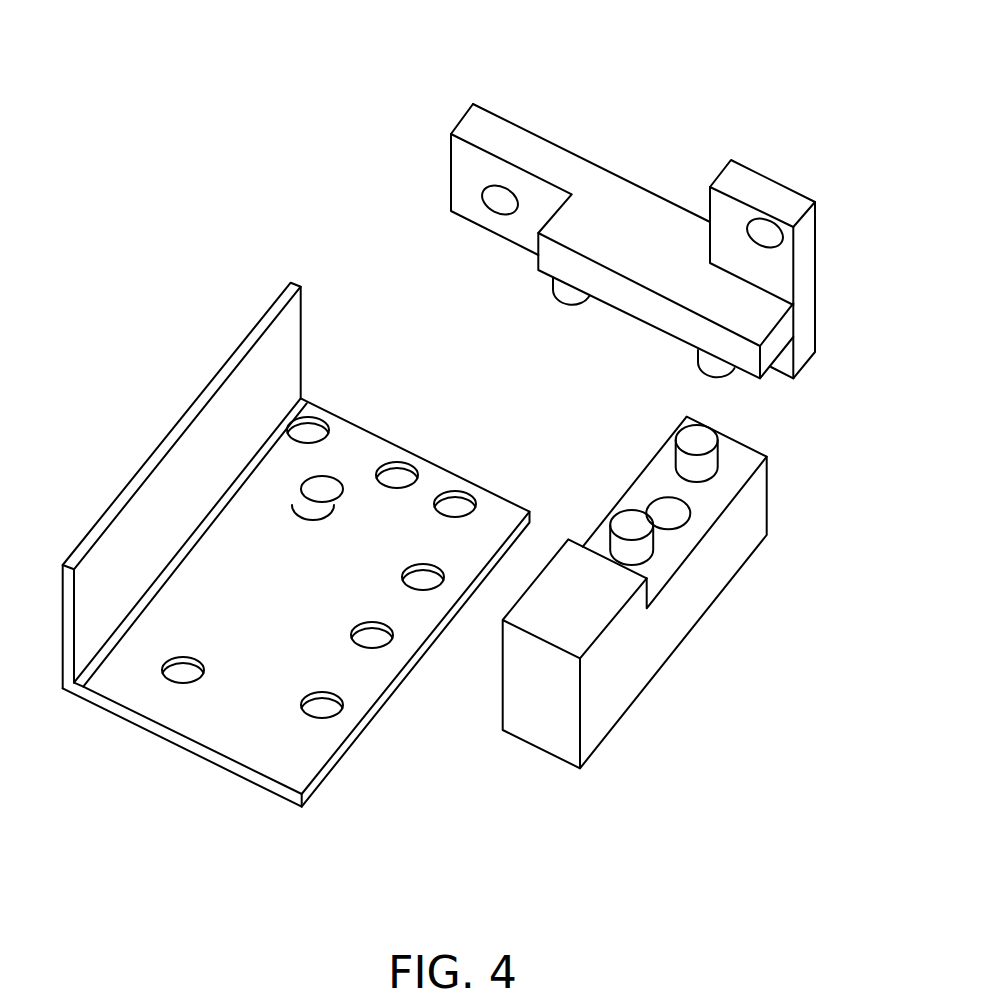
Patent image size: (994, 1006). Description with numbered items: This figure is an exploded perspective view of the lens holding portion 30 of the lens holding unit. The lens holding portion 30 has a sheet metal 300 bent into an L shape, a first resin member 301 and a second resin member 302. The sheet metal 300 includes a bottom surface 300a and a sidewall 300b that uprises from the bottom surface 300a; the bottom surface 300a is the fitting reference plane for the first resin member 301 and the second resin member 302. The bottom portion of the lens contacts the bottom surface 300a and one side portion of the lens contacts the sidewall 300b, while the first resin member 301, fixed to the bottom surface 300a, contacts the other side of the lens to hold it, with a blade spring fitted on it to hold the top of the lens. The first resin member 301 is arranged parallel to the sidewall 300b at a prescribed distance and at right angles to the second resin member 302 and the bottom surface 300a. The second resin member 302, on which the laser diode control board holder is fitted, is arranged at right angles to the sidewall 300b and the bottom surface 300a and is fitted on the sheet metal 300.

The lens holding portion 30 is at (781, 109).
The sheet metal 300 is at (387, 753).
The bottom surface 300a is at (227, 740).
The sidewall 300b is at (167, 487).
The first resin member 301 is at (602, 707).
The second resin member 302 is at (643, 215).